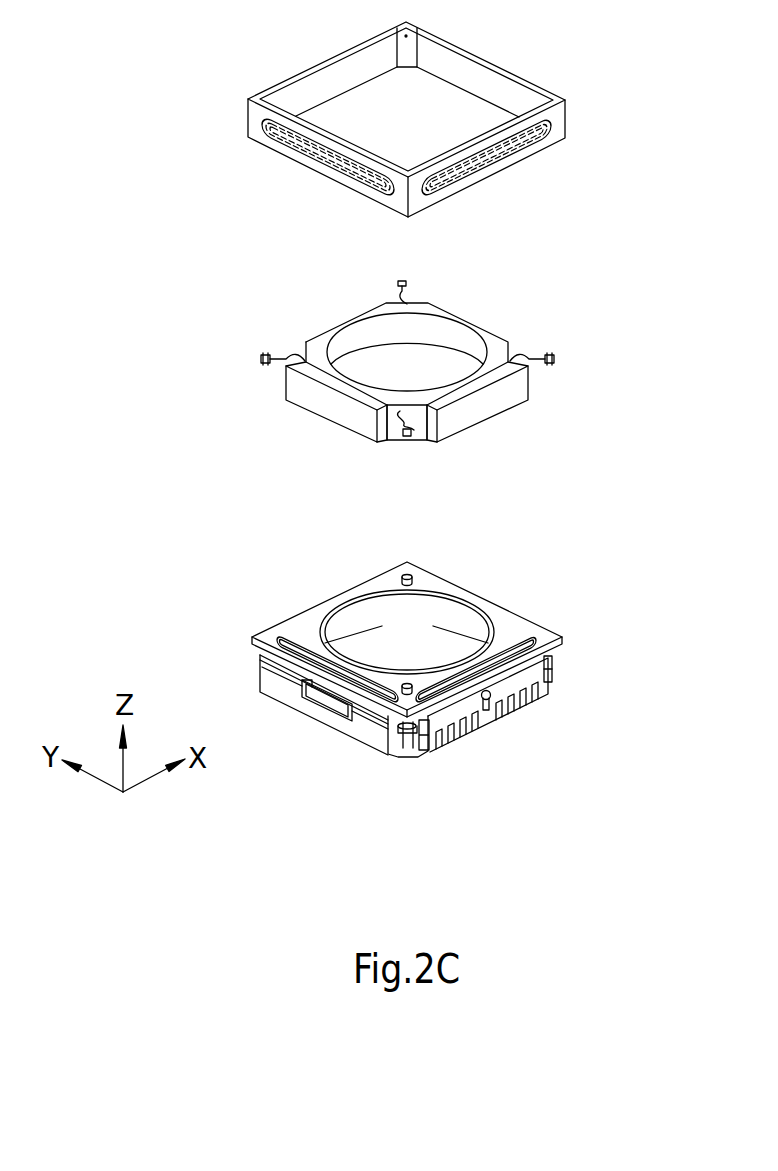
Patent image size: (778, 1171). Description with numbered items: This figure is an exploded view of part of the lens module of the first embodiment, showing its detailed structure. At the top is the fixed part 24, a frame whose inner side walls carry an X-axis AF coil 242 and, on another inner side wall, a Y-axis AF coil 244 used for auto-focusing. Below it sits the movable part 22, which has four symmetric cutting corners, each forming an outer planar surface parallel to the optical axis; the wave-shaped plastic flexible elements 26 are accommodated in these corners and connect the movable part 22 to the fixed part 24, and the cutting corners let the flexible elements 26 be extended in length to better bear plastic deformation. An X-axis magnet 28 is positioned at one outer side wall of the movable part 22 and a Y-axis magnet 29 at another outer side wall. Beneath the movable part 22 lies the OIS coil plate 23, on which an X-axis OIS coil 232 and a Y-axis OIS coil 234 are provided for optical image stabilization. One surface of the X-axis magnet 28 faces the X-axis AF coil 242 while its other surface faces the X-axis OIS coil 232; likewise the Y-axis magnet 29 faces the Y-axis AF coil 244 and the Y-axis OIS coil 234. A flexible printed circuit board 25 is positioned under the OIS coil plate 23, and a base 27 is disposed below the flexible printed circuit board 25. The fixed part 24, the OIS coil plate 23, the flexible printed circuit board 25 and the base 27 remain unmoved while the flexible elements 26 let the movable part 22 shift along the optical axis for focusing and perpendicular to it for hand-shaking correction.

The movable part 22 is at (487, 342).
The OIS coil plate 23 is at (513, 618).
The fixed part 24 is at (483, 70).
The flexible printed circuit board 25 is at (518, 698).
The wave-shaped plastic flexible elements 26 is at (542, 362).
The base 27 is at (373, 735).
The X-axis magnet 28 is at (480, 400).
The Y-axis magnet 29 is at (335, 402).
The X-axis OIS coil 232 is at (541, 645).
The Y-axis OIS coil 234 is at (279, 640).
The X-axis AF coil 242 is at (552, 123).
The Y-axis AF coil 244 is at (331, 172).